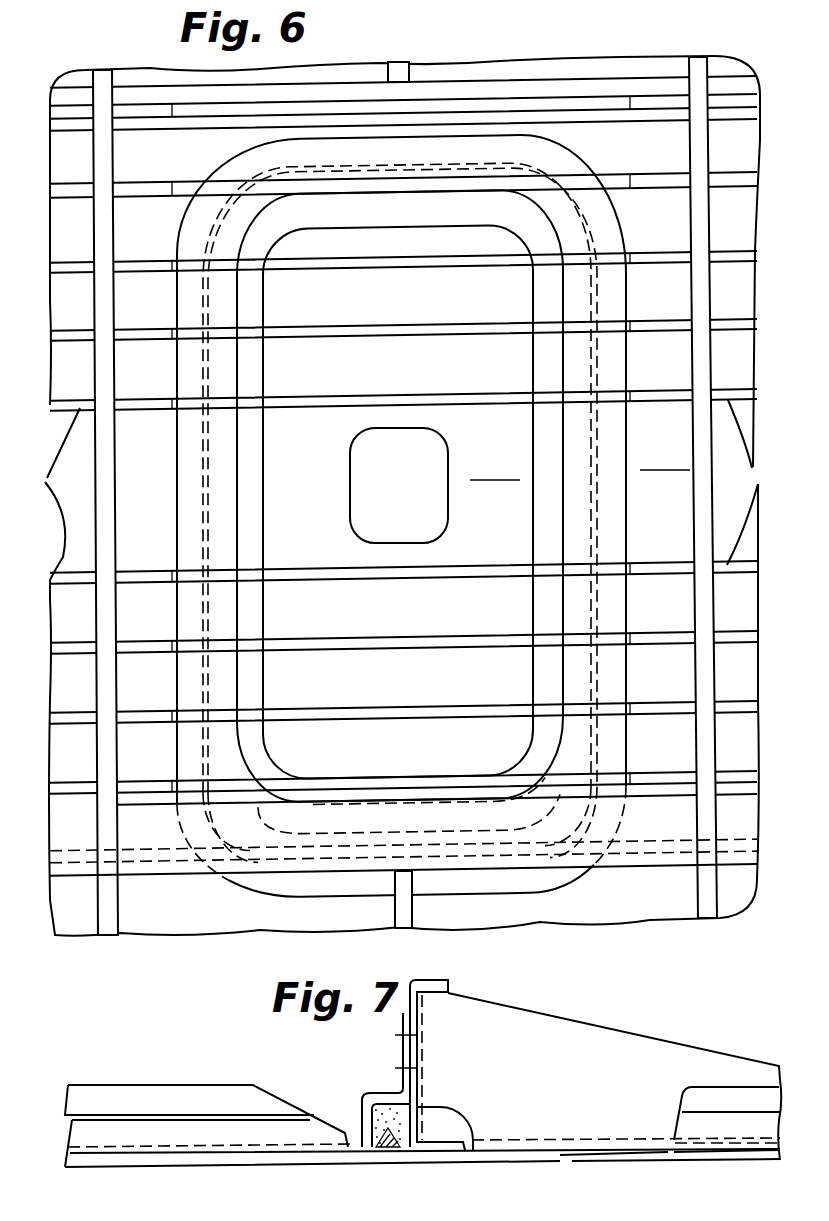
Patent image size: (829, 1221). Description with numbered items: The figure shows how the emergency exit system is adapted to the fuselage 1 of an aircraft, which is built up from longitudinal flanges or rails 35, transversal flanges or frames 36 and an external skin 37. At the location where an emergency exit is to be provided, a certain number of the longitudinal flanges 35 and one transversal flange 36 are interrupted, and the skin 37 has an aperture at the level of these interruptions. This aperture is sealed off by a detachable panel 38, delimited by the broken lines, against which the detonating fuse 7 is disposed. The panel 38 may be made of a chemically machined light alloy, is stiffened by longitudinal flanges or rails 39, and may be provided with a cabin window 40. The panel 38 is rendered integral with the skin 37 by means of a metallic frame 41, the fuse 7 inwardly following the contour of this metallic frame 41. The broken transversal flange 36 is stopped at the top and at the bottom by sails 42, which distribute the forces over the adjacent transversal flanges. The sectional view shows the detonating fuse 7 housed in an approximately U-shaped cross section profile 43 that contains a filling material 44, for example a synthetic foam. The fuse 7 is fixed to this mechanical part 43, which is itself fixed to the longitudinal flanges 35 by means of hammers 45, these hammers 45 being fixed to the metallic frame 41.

In FIG. 6, the fuselage 1 is at (152, 940).
In FIG. 6, the detonating fuse 7 is at (263, 490).
In FIG. 7, the detonating fuse 7 is at (398, 1155).
In FIG. 6, the longitudinal flanges 35 is at (408, 490).
In FIG. 7, the longitudinal flanges 35 is at (770, 1126).
In FIG. 6, the transversal flanges 36 is at (115, 176).
In FIG. 6, the external skin 37 is at (678, 456).
In FIG. 7, the external skin 37 is at (666, 1158).
In FIG. 6, the detachable panel 38 is at (503, 536).
In FIG. 7, the detachable panel 38 is at (234, 1156).
In FIG. 6, the longitudinal flanges 39 is at (386, 338).
In FIG. 7, the longitudinal flanges 39 is at (175, 1098).
In FIG. 6, the cabin window 40 is at (449, 455).
In FIG. 6, the metallic frame 41 is at (620, 510).
In FIG. 7, the metallic frame 41 is at (549, 1136).
In FIG. 6, the sails 42 is at (565, 88).
In FIG. 7, the U-shaped cross section profile 43 is at (368, 1130).
In FIG. 7, the filling material 44 is at (378, 1150).
In FIG. 6, the hammers 45 is at (186, 401).
In FIG. 7, the hammers 45 is at (588, 1036).